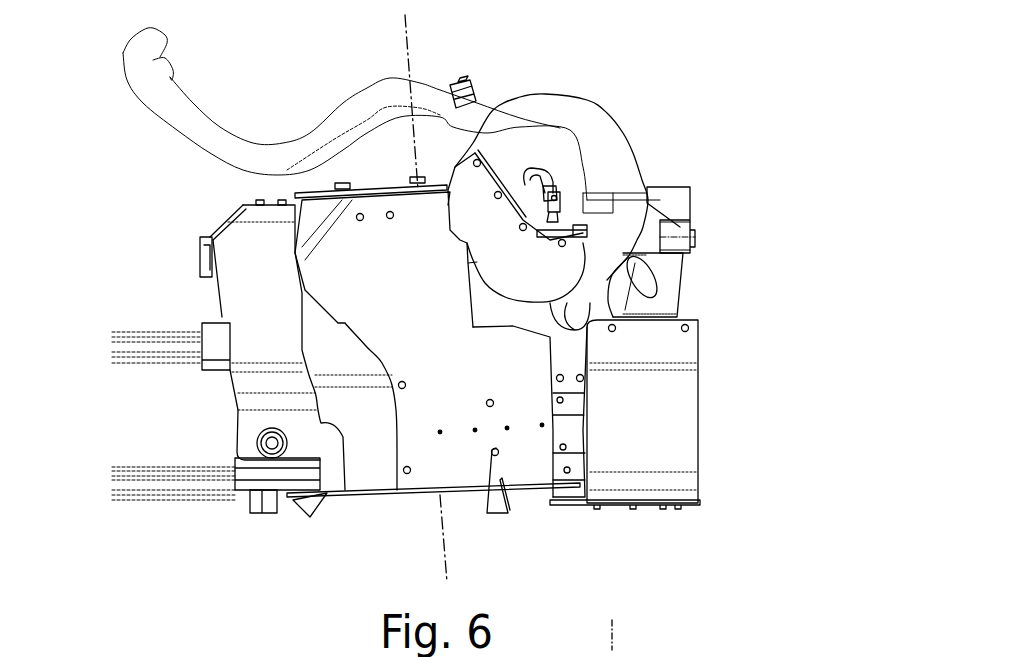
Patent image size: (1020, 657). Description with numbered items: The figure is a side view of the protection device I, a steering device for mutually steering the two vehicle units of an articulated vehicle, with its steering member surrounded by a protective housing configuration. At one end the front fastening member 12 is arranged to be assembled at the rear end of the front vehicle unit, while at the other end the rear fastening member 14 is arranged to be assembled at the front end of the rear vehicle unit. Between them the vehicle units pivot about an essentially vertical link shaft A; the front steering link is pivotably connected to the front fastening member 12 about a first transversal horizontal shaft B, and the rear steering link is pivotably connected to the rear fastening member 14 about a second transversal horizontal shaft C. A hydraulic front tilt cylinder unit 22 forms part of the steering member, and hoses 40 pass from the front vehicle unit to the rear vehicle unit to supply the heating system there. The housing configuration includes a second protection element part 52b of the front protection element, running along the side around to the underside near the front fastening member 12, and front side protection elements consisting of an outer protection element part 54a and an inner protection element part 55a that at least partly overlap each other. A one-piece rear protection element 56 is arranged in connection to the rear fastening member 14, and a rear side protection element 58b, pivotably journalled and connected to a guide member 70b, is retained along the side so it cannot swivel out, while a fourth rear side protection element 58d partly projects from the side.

The hoses 40 is at (340, 105).
The outer protection element part 54a is at (483, 203).
The inner protection element part 55a is at (513, 310).
The front tilt cylinder unit 22 is at (676, 199).
The rear protection element 56 is at (228, 218).
The rear fastening member 14 is at (208, 324).
The front fastening member 12 is at (670, 287).
The second protection element part 52b is at (653, 417).
The guide member 70b is at (577, 397).
The second rear side protection element 58b is at (517, 447).
The fourth rear side protection element 58d is at (367, 447).
The vertical link shaft A is at (410, 62).
The first transversal horizontal shaft B is at (610, 637).
The second transversal horizontal shaft C is at (263, 457).
The protection device I is at (563, 58).